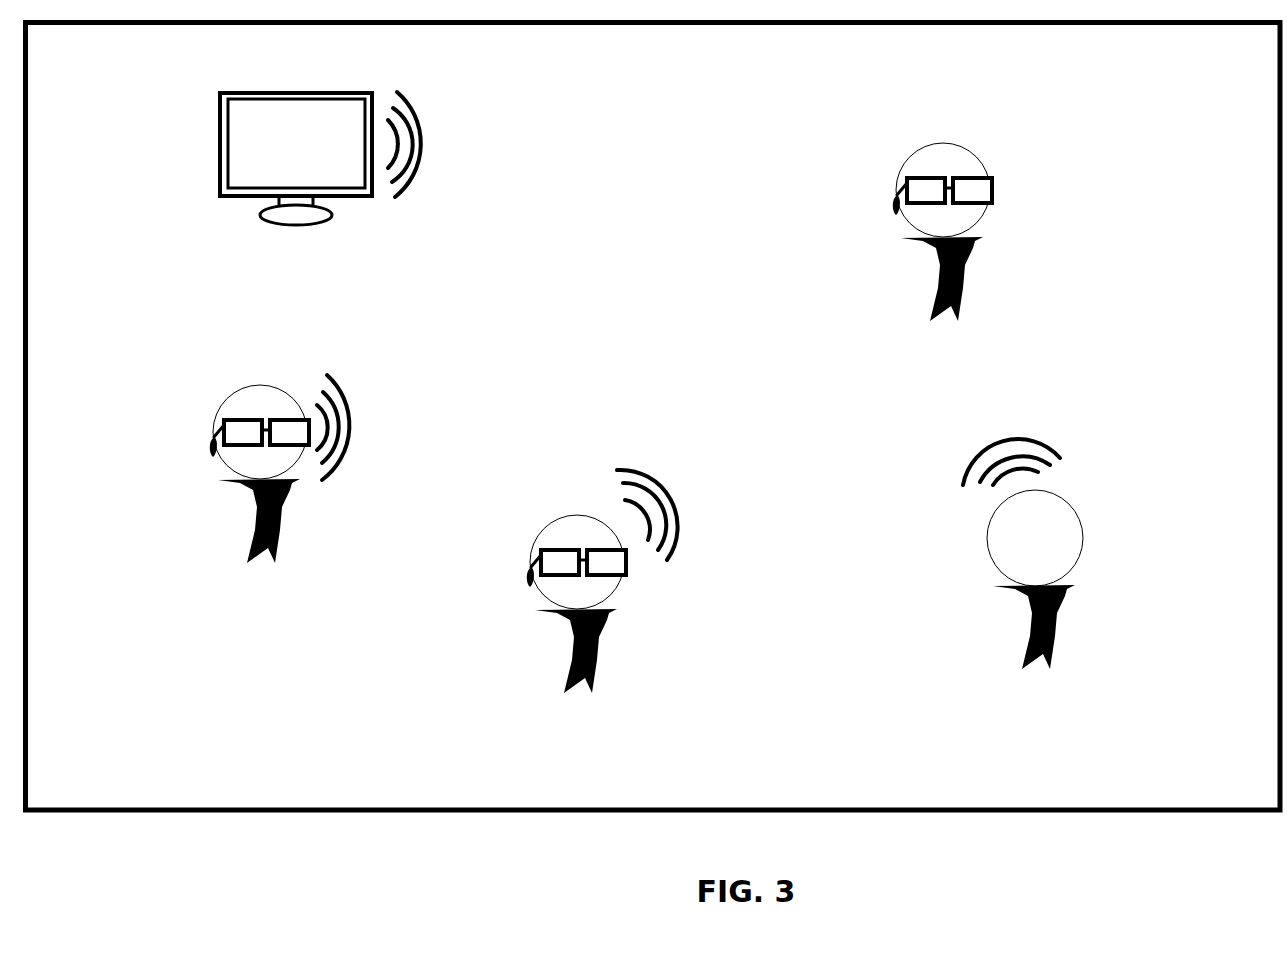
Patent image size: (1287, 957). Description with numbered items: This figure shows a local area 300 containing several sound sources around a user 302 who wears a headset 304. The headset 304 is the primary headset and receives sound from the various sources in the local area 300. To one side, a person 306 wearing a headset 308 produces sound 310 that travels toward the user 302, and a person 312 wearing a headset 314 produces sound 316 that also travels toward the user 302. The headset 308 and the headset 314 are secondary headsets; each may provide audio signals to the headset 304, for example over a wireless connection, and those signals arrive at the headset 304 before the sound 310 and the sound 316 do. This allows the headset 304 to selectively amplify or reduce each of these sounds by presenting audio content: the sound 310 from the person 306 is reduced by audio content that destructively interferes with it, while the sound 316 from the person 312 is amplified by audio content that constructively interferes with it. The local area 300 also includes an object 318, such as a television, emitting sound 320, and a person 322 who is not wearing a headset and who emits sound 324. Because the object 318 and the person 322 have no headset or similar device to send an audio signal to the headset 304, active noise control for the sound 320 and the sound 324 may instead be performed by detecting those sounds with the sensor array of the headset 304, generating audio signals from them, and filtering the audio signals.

The local area 300 is at (632, 86).
The user 302 is at (968, 243).
The headset 304 is at (993, 195).
The person 306 is at (240, 492).
The headset 308 is at (217, 432).
The sound 310 is at (350, 432).
The person 312 is at (565, 623).
The headset 314 is at (533, 562).
The sound 316 is at (673, 538).
The object 318 is at (222, 142).
The sound 320 is at (422, 148).
The person 322 is at (1018, 598).
The sound 324 is at (1060, 458).